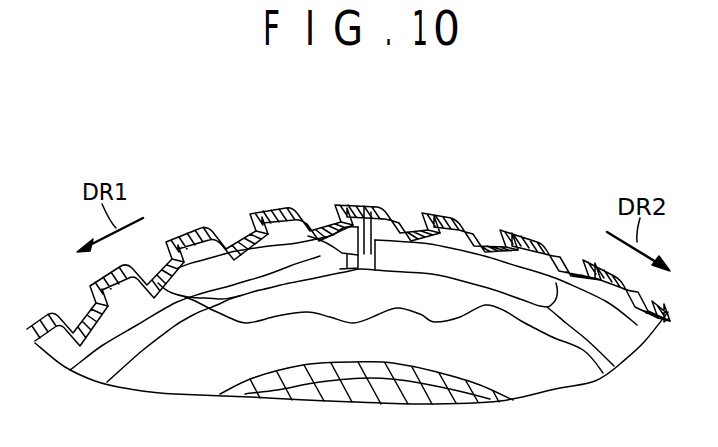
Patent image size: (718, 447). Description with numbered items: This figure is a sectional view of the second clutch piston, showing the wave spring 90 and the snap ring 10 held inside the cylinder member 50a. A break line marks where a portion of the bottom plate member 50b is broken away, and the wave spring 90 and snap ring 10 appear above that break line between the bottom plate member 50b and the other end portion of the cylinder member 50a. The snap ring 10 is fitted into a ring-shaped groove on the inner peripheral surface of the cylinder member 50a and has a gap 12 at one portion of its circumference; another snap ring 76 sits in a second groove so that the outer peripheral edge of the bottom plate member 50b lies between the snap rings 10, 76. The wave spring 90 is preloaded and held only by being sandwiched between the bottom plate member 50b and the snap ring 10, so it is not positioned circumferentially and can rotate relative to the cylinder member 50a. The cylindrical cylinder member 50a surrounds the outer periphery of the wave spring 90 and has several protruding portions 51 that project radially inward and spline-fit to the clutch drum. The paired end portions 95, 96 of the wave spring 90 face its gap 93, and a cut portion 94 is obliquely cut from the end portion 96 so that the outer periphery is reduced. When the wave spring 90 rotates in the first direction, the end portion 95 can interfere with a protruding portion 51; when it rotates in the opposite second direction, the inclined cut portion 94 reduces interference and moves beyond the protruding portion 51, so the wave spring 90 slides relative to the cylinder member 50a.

The snap ring 10 is at (282, 240).
The gap 12 is at (430, 237).
The cylinder member 50a is at (523, 242).
The bottom plate member 50b is at (613, 360).
The protruding portion 51 is at (477, 243).
The snap ring 76 is at (640, 340).
The wave spring 90 is at (262, 262).
The gap 93 is at (368, 208).
The cut portion 94 is at (332, 240).
The end portion 95 is at (376, 232).
The end portion 96 is at (346, 245).